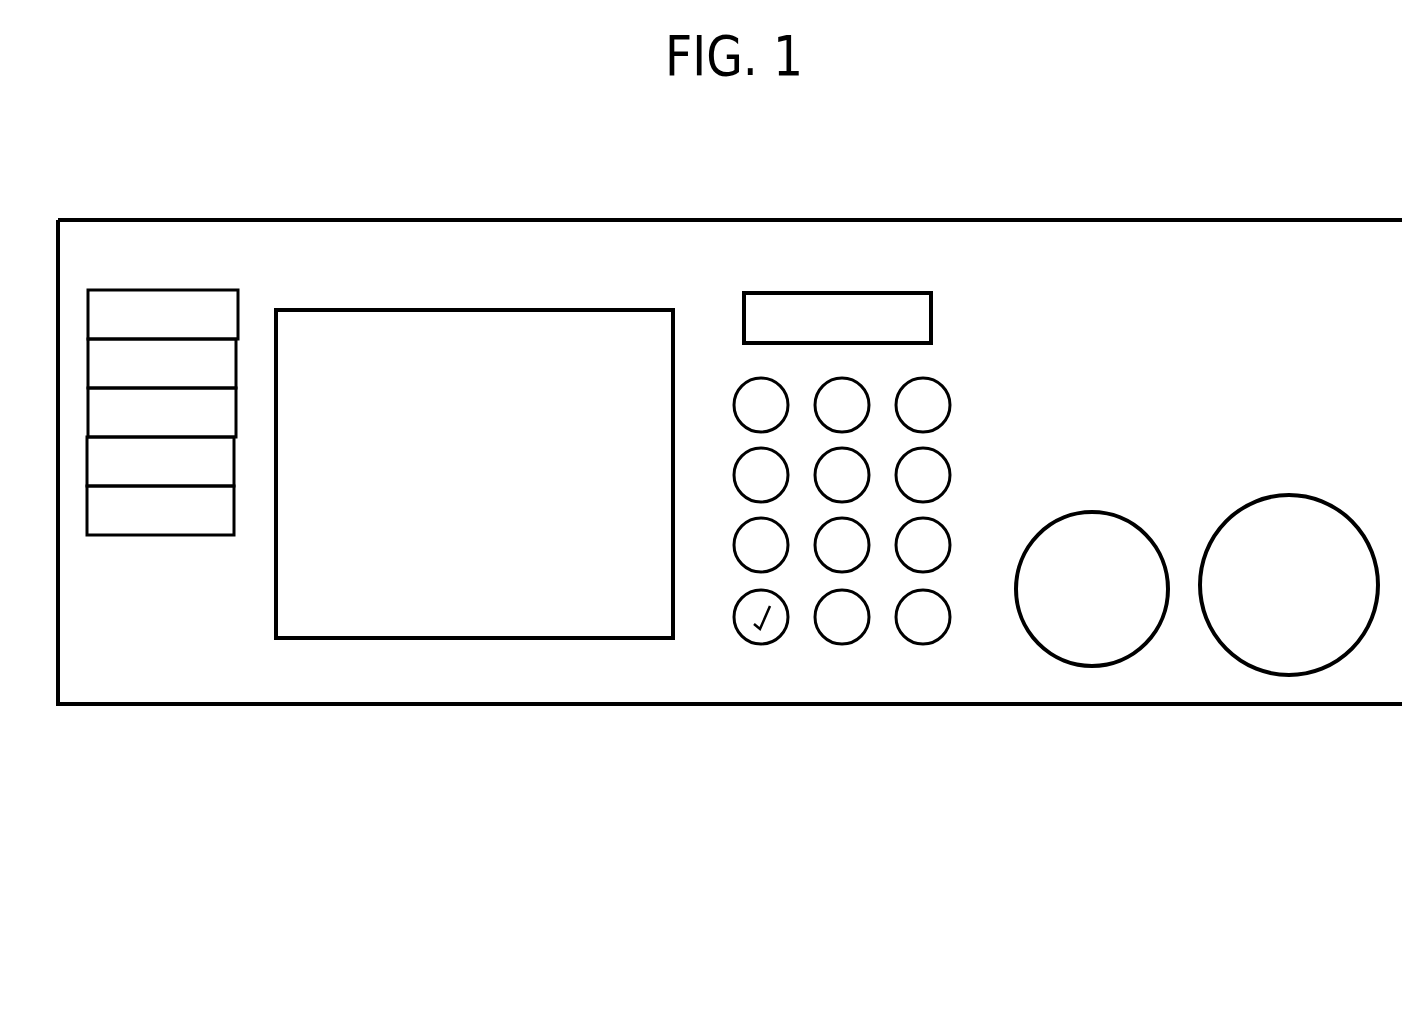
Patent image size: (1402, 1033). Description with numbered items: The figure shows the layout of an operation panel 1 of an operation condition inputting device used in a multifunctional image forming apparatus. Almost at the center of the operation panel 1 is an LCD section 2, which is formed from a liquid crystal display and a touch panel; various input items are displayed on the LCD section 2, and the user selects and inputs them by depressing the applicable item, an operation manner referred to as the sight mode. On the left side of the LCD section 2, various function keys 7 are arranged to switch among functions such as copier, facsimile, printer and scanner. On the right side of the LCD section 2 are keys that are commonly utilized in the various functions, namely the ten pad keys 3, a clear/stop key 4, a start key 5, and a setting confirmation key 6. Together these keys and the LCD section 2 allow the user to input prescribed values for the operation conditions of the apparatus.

The operation panel 1 is at (960, 184).
The LCD section 2 is at (645, 310).
The ten pad keys 3 is at (922, 644).
The clear/stop key 4 is at (1088, 667).
The start key 5 is at (1283, 675).
The setting confirmation key 6 is at (931, 318).
The function keys 7 is at (180, 290).